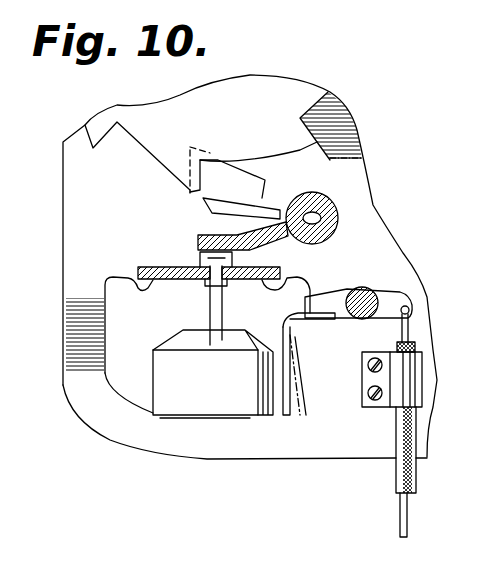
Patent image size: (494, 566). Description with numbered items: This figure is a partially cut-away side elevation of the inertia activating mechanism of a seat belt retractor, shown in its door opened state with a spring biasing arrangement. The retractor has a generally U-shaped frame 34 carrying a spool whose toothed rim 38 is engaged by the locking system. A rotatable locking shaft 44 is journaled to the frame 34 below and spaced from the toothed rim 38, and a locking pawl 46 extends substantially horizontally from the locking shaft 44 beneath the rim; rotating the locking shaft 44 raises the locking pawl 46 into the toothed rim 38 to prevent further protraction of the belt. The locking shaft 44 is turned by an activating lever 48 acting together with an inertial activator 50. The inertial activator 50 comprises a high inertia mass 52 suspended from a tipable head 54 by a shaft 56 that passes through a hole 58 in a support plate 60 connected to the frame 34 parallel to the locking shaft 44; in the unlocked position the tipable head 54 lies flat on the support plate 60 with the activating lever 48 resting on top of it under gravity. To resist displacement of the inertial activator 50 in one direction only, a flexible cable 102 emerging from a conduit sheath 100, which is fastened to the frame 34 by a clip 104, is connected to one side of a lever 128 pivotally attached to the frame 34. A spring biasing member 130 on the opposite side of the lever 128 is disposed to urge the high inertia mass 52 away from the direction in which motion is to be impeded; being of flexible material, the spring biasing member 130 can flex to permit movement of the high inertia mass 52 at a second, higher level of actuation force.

The frame 34 is at (347, 113).
The toothed rim 38 is at (243, 95).
The rotatable locking shaft 44 is at (315, 192).
The locking pawl 46 is at (230, 207).
The activating lever 48 is at (267, 245).
The inertial activator 50 is at (192, 313).
The high inertia mass 52 is at (183, 393).
The tipable head 54 is at (203, 262).
The shaft 56 is at (223, 305).
The hole 58 is at (208, 282).
The support plate 60 is at (137, 264).
The conduit sheath 100 is at (407, 353).
The flexible cable 102 is at (410, 327).
The clip 104 is at (395, 387).
The lever 128 is at (387, 302).
The spring biasing member 130 is at (293, 420).